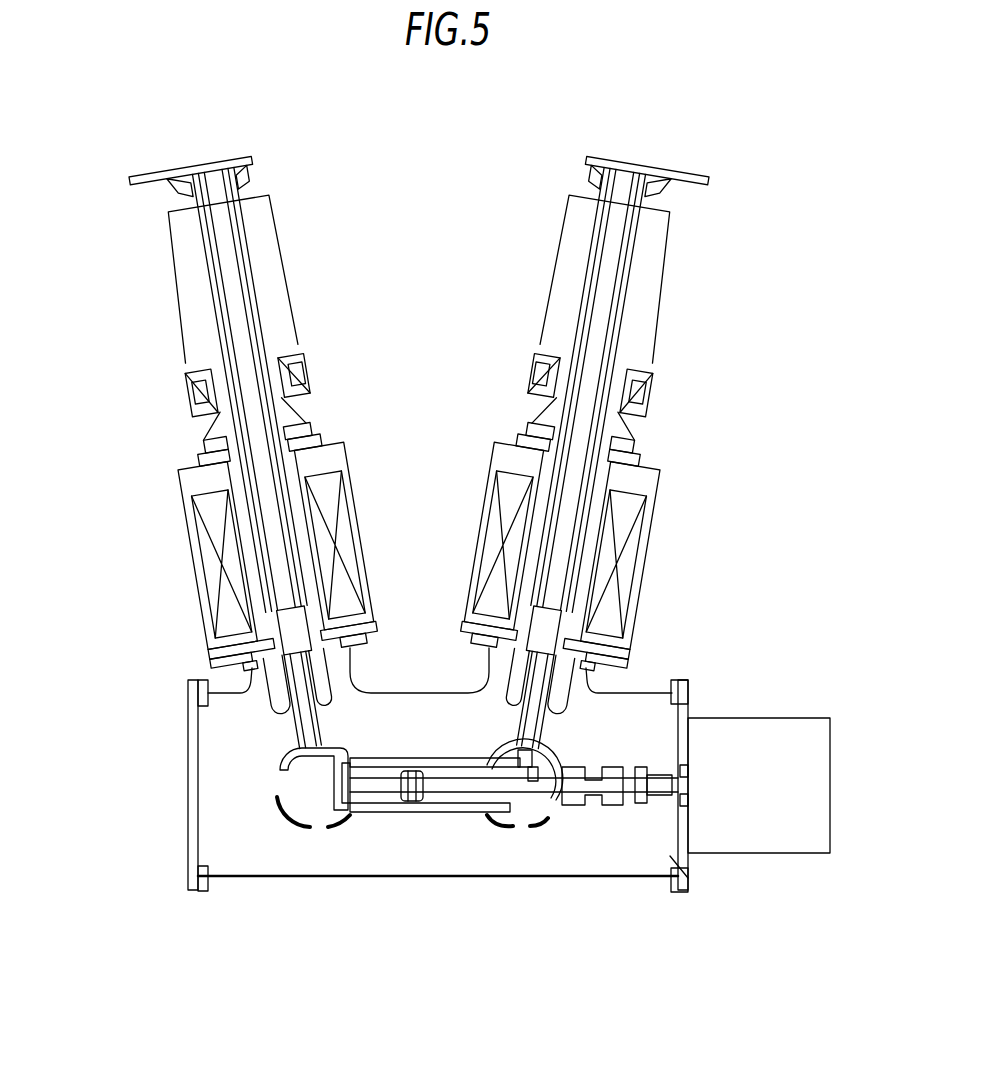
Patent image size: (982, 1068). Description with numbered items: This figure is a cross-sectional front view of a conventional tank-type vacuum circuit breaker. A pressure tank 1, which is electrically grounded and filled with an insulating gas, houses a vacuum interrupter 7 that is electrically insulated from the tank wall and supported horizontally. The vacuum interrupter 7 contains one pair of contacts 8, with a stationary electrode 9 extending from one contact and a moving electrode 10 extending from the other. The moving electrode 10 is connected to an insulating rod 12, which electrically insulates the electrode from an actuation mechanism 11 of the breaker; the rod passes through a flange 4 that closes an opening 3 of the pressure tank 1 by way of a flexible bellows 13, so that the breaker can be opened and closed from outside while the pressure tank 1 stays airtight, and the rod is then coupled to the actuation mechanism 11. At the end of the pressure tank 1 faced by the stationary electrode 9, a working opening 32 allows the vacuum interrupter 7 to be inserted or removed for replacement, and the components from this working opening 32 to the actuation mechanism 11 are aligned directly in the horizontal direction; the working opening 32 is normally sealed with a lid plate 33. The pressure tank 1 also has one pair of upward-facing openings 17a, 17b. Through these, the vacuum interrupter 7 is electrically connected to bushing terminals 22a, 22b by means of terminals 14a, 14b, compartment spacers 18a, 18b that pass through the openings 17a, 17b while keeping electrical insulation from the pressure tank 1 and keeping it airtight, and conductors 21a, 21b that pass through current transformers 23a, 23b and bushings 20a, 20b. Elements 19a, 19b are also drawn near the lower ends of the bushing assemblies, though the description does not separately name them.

The pressure tank 1 is at (287, 877).
The opening 3 is at (690, 888).
The flange 4 is at (690, 860).
The vacuum interrupter 7 is at (424, 758).
The contacts 8 is at (412, 810).
The stationary electrode 9 is at (368, 800).
The moving electrode 10 is at (463, 810).
The actuation mechanism 11 is at (793, 838).
The insulating rod 12 is at (598, 806).
The flexible bellows 13 is at (653, 765).
The terminal 14a is at (333, 777).
The terminal 14b is at (537, 780).
The opening 17a is at (258, 669).
The opening 17b is at (622, 652).
The compartment spacer 18a is at (273, 648).
The compartment spacer 18b is at (563, 652).
The plunger head 19a is at (290, 625).
The plunger head 19b is at (547, 632).
The bushing 20a is at (178, 325).
The bushing 20b is at (660, 329).
The conductor 21a is at (226, 273).
The conductor 21b is at (613, 267).
The bushing terminal 22a is at (192, 167).
The bushing terminal 22b is at (665, 163).
The current transformer 23a is at (197, 530).
The current transformer 23b is at (637, 535).
The working opening 32 is at (207, 727).
The lid plate 33 is at (190, 775).